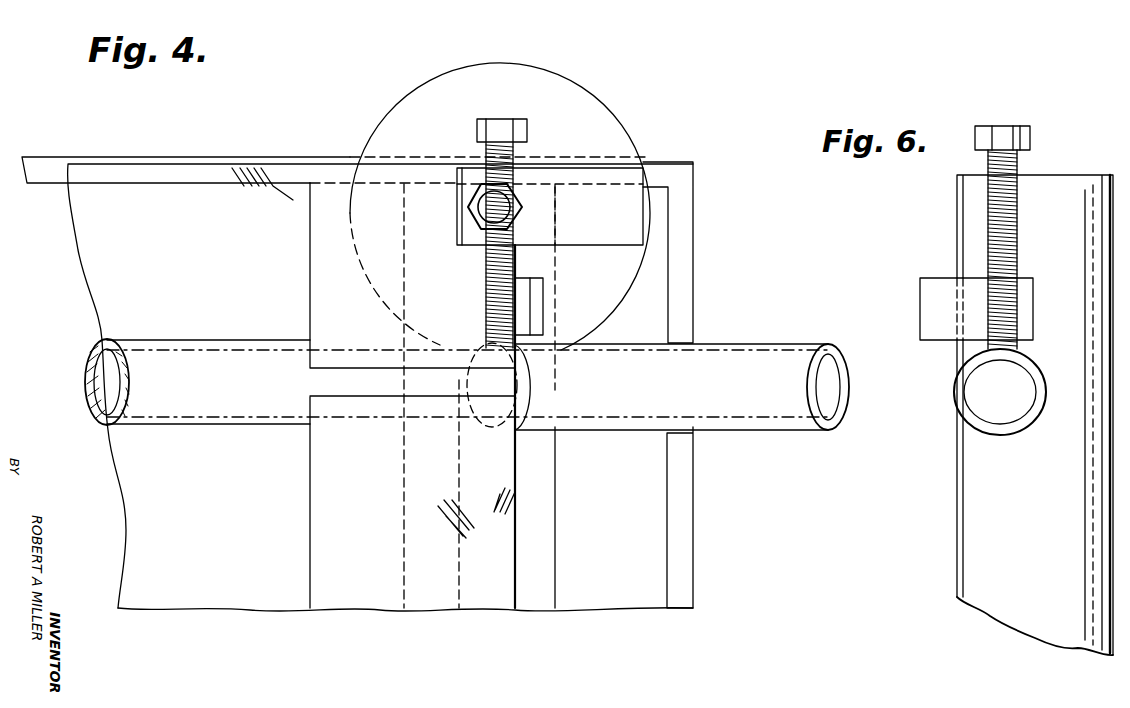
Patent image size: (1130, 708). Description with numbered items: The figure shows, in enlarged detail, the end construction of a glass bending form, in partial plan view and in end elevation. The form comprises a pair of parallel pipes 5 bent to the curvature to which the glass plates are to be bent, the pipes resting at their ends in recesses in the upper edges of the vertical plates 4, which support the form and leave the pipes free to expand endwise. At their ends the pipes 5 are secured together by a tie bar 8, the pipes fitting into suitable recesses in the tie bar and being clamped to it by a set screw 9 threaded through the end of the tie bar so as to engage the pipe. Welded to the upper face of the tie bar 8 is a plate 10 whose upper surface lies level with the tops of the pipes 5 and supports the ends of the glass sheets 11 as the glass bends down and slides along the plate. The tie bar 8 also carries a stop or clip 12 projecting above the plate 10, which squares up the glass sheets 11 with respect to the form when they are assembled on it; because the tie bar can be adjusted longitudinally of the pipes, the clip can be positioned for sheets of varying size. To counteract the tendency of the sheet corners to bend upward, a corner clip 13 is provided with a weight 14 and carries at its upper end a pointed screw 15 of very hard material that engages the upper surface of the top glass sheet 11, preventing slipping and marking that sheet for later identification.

In FIG. 4, the vertical plate 4 is at (682, 288).
In FIG. 4, the pipe 5 is at (108, 360).
In FIG. 6, the pipe 5 is at (978, 392).
In FIG. 4, the tie bar 8 is at (535, 480).
In FIG. 6, the tie bar 8 is at (1013, 575).
In FIG. 4, the set screw 9 is at (497, 130).
In FIG. 6, the set screw 9 is at (1015, 163).
In FIG. 4, the plate 10 is at (312, 270).
In FIG. 6, the plate 10 is at (957, 197).
In FIG. 4, the glass sheet 11 is at (105, 247).
In FIG. 4, the stop or clip 12 is at (522, 303).
In FIG. 6, the stop or clip 12 is at (930, 285).
In FIG. 4, the clip 13 is at (612, 178).
In FIG. 4, the weight 14 is at (552, 92).
In FIG. 4, the pointed screw 15 is at (512, 212).